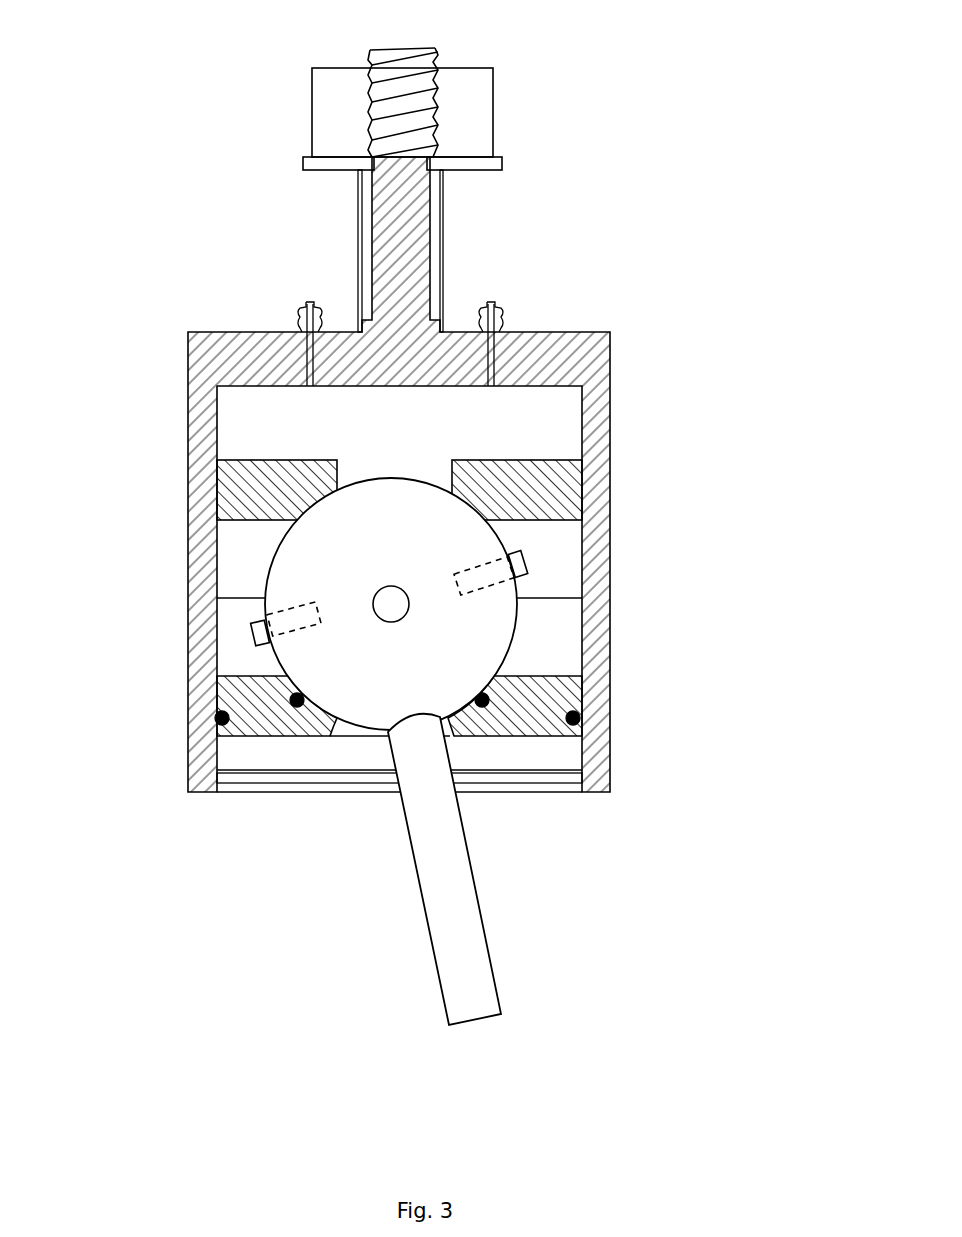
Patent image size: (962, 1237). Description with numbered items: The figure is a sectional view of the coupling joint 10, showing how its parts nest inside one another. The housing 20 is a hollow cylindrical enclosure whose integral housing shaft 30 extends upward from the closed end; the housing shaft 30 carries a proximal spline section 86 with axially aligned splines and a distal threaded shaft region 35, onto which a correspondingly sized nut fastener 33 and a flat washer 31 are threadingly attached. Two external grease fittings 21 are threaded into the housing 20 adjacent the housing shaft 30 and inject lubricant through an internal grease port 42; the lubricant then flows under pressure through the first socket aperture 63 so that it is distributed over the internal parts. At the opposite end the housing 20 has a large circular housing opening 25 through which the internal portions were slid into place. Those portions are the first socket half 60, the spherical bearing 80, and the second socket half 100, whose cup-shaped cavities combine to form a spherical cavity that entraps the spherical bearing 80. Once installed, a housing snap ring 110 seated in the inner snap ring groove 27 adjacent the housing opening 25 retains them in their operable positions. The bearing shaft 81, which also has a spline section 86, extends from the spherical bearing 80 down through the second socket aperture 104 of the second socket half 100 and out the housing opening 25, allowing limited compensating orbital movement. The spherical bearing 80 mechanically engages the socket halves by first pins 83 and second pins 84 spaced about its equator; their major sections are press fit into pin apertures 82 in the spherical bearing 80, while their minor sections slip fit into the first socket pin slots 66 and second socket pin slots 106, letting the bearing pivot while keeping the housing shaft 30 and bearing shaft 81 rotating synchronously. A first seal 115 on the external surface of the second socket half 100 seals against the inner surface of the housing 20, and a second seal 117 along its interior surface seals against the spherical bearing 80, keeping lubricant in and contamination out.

The coupling joint 10 is at (100, 78).
The housing 20 is at (197, 353).
The grease fittings 21 is at (305, 305).
The housing opening 25 is at (518, 795).
The snap ring groove 27 is at (595, 773).
The housing shaft 30 is at (380, 280).
The flat washer 31 is at (302, 160).
The nut fastener 33 is at (312, 118).
The threaded shaft region 35 is at (432, 112).
The internal grease port 42 is at (305, 387).
The first socket half 60 is at (248, 480).
The first socket aperture 63 is at (392, 438).
The first socket pin slots 66 is at (237, 548).
The spherical bearing 80 is at (355, 725).
The bearing shaft 81 is at (445, 868).
The pin apertures 82 is at (312, 602).
The first pins 83 is at (262, 648).
The second pins 84 is at (373, 622).
The spline section 86 is at (358, 222).
The second socket half 100 is at (222, 690).
The second socket aperture 104 is at (455, 735).
The second socket pin slots 106 is at (230, 632).
The housing snap ring 110 is at (550, 771).
The first seal 115 is at (215, 718).
The second seal 117 is at (297, 707).